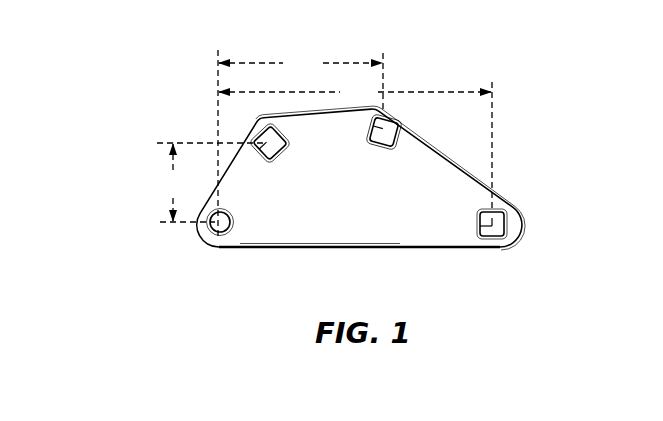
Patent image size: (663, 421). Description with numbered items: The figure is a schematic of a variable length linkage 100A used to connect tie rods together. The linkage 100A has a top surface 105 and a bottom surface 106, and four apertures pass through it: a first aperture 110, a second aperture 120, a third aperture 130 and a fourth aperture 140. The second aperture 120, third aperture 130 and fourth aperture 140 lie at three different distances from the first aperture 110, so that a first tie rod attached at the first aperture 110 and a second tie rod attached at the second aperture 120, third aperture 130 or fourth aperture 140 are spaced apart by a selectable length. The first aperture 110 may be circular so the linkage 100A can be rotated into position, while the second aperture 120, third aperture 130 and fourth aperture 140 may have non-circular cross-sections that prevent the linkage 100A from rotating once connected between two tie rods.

The variable length linkage 100A is at (153, 58).
The top surface 105 is at (378, 193).
The bottom surface 106 is at (331, 252).
The first aperture 110 is at (212, 229).
The second aperture 120 is at (252, 138).
The third aperture 130 is at (390, 131).
The fourth aperture 140 is at (503, 229).